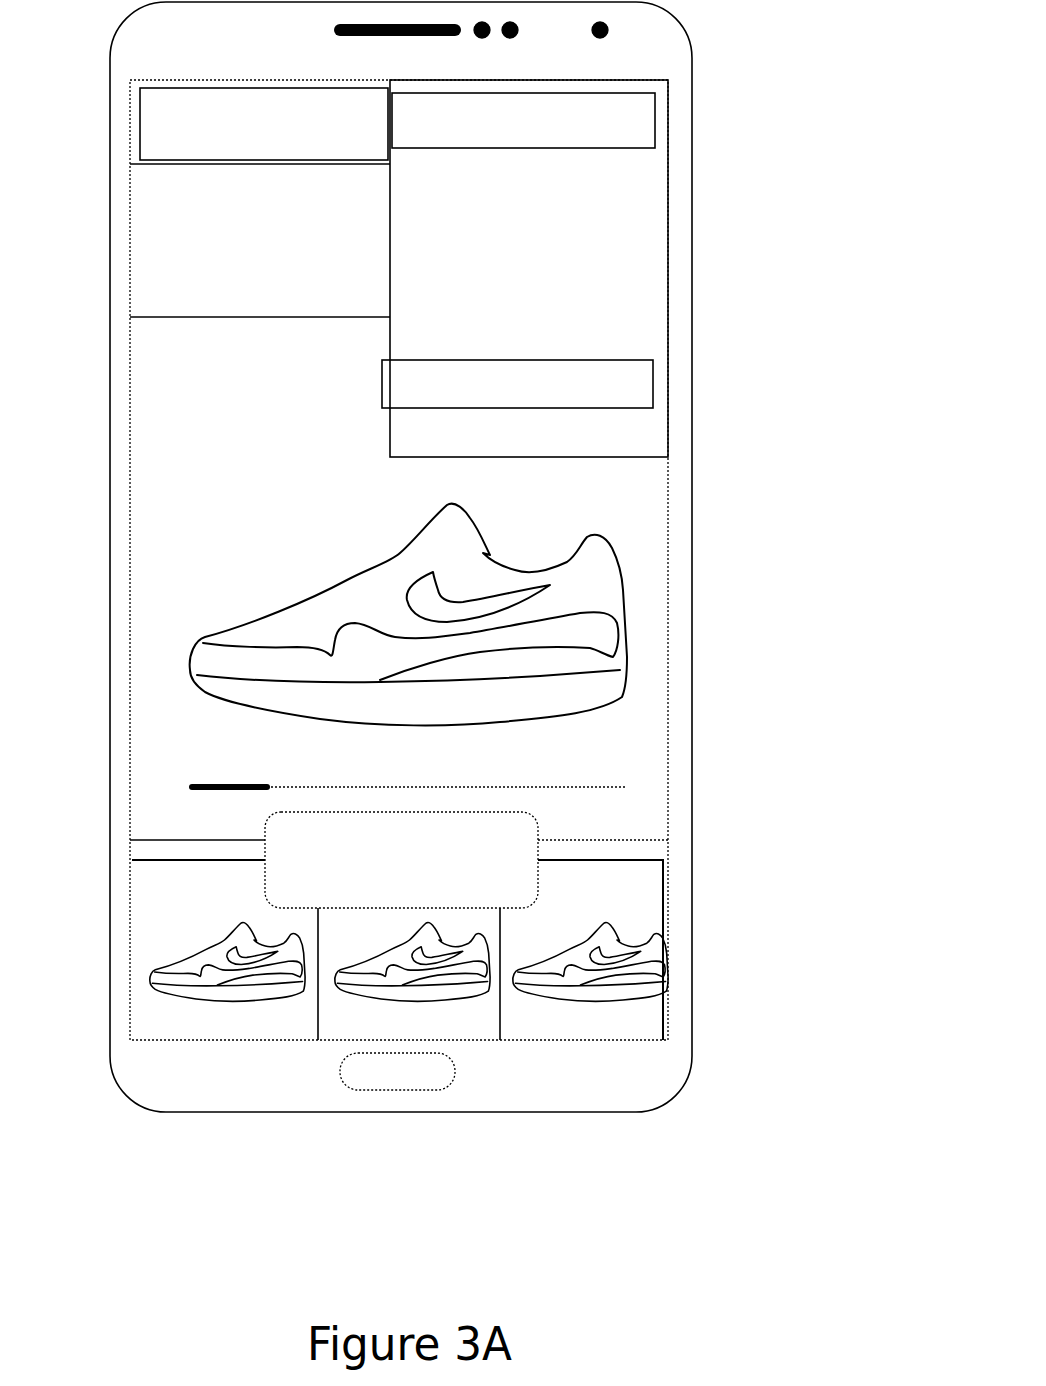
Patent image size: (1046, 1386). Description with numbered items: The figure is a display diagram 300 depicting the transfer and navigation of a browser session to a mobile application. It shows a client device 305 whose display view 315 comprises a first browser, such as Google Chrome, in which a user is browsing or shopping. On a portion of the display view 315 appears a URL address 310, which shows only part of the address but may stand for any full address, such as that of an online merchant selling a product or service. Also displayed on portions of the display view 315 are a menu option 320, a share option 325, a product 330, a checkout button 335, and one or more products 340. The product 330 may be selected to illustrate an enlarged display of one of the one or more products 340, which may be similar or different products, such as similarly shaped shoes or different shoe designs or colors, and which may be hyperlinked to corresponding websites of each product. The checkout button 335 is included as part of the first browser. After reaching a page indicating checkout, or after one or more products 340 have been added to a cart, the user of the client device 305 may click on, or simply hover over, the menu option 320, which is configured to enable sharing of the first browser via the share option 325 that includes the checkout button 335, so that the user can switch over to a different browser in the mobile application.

The display diagram 300 is at (467, 557).
The client device 305 is at (112, 318).
The URL address 310 is at (140, 136).
The display view 315 is at (145, 190).
The menu option 320 is at (635, 117).
The share option 325 is at (615, 390).
The product 330 is at (613, 707).
The checkout button 335 is at (525, 882).
The one or more products 340 is at (705, 930).